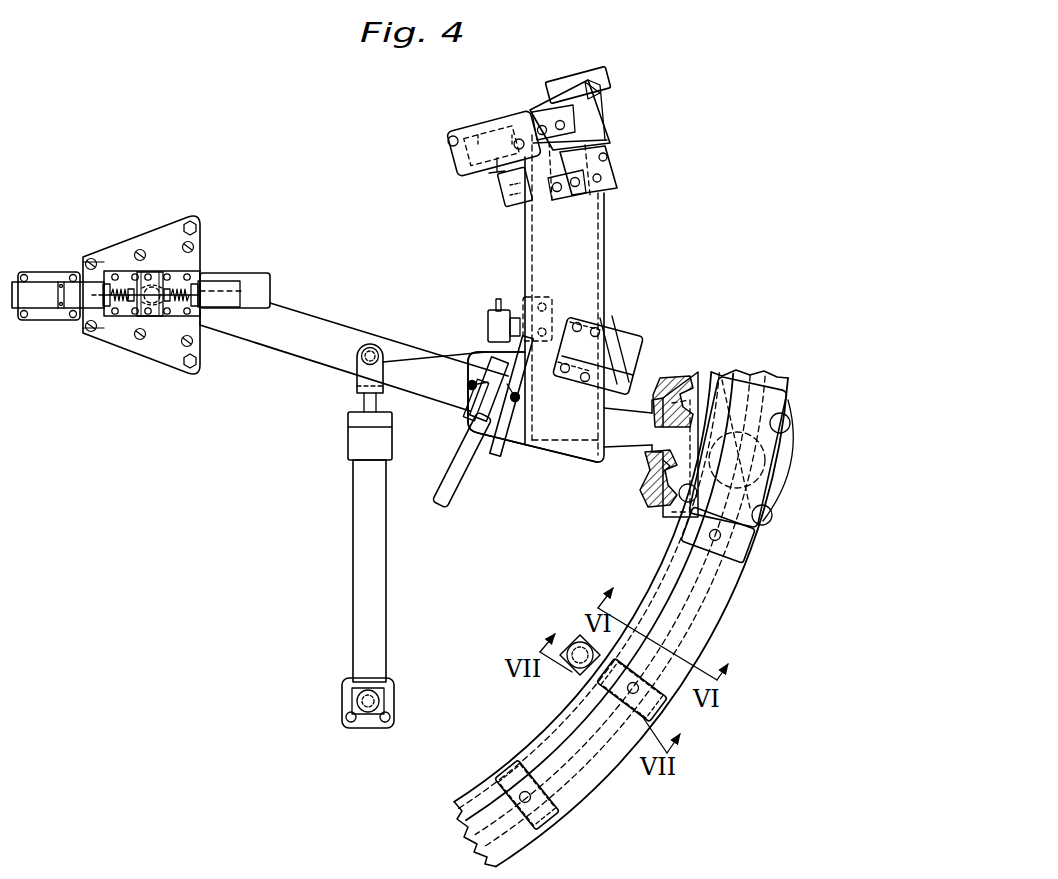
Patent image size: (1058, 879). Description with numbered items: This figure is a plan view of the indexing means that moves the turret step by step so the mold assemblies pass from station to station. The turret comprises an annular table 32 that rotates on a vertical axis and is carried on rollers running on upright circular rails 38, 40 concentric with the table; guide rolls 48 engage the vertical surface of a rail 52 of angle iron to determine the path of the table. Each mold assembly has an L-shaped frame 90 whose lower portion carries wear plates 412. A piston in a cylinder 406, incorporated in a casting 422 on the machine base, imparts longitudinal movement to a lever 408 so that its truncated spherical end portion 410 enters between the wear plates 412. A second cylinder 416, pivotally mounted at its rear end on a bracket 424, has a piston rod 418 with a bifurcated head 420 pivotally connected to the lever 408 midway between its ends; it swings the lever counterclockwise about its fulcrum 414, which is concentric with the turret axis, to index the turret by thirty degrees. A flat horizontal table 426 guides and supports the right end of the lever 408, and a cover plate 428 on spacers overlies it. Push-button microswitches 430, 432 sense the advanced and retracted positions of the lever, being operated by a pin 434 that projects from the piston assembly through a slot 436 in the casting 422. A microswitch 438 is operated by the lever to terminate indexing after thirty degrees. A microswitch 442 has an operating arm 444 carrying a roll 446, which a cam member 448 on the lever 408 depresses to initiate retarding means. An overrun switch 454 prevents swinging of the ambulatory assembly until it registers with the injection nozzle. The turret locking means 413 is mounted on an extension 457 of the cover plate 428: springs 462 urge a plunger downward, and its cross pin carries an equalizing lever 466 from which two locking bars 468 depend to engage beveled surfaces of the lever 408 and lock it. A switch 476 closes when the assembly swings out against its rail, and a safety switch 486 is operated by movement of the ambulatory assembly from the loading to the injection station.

The annular table 32 is at (577, 801).
The circular rail 38 is at (661, 571).
The circular rail 40 is at (716, 611).
The guide roll 48 is at (574, 667).
The rail 52 is at (547, 714).
The L-shaped frame 90 is at (647, 506).
The cylinder 406 is at (146, 288).
The lever 408 is at (264, 343).
The truncated spherical end portion 410 is at (645, 446).
The wear plates 412 is at (650, 396).
The turret locking means 413 is at (463, 423).
The fulcrum 414 is at (158, 276).
The cylinder 416 is at (357, 531).
The piston rod 418 is at (362, 399).
The bifurcated head 420 is at (386, 358).
The casting 422 is at (116, 250).
The bracket 424 is at (352, 729).
The table 426 is at (519, 264).
The cover plate 428 is at (538, 241).
The microswitch 430 is at (225, 287).
The microswitch 432 is at (77, 293).
The pin 434 is at (170, 317).
The slot 436 is at (133, 312).
The microswitch 438 is at (505, 197).
The microswitch 442 is at (487, 313).
The operating arm 444 is at (500, 331).
The roll 446 is at (495, 304).
The cam member 448 is at (452, 488).
The overrun switch 454 is at (497, 135).
The extension 457 is at (486, 353).
The springs 462 is at (468, 387).
The equalizing lever 466 is at (488, 385).
The locking bars 468 is at (480, 427).
The switch 476 is at (621, 108).
The safety switch 486 is at (651, 344).